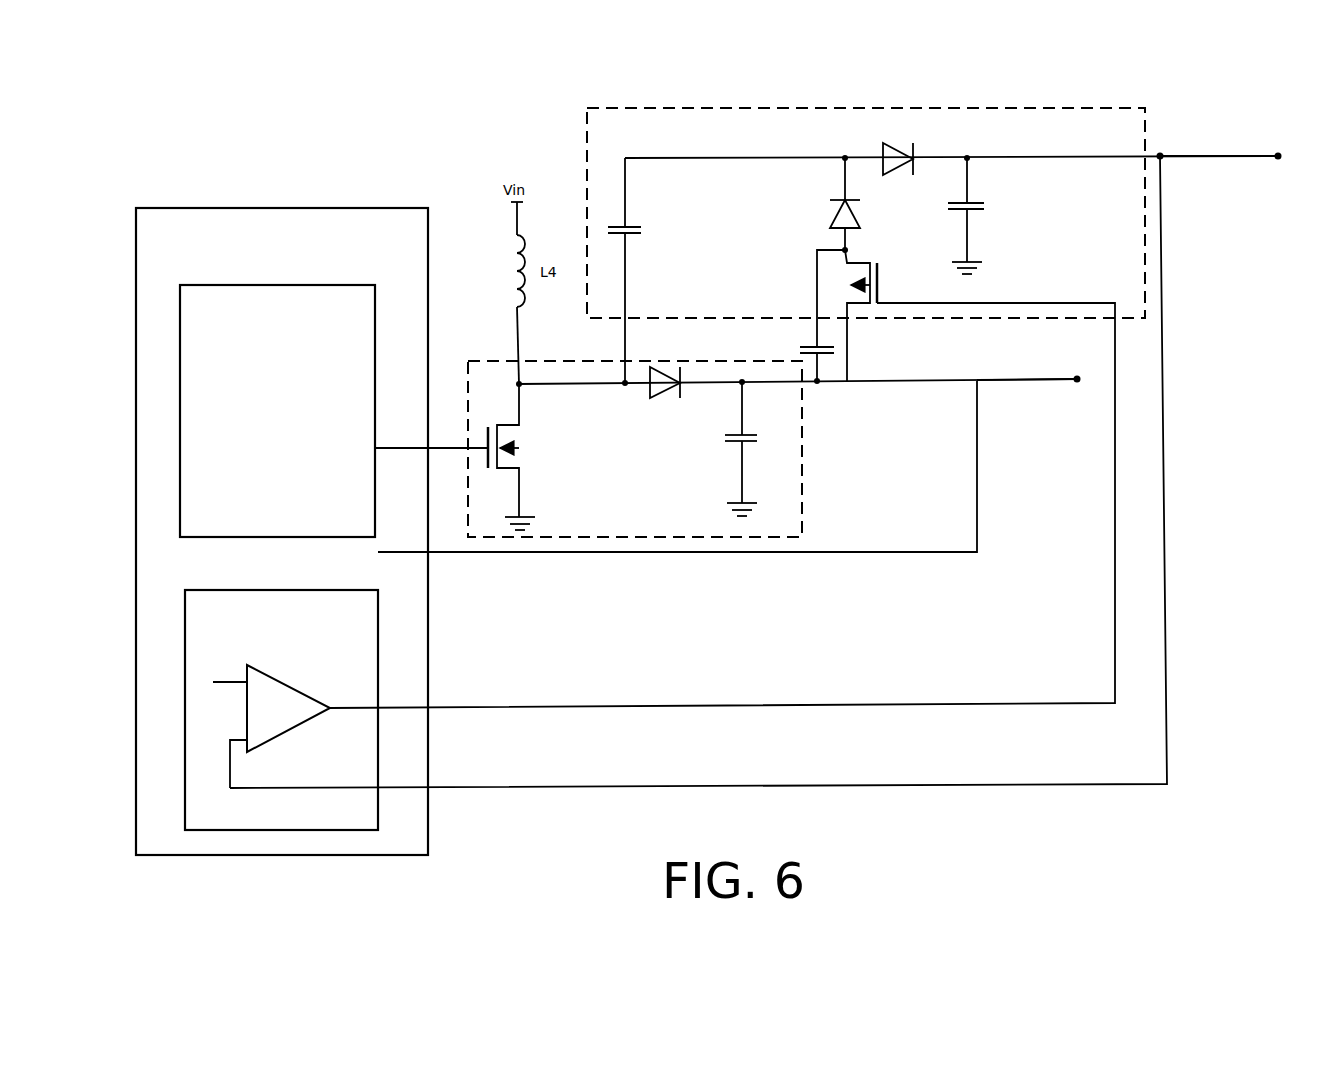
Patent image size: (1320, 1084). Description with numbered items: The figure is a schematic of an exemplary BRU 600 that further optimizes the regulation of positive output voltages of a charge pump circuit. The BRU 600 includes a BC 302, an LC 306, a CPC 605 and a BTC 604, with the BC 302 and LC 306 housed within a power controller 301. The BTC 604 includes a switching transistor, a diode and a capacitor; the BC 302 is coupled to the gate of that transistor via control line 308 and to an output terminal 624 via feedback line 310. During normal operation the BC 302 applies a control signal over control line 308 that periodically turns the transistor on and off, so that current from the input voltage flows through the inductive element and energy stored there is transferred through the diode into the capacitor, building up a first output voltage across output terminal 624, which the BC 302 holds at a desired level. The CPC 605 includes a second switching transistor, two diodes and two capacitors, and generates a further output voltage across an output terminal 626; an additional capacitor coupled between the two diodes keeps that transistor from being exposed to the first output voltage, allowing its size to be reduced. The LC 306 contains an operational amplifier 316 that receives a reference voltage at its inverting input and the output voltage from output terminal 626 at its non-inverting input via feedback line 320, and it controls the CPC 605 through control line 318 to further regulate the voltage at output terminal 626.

The BRU 600 is at (182, 111).
The power controller 301 is at (207, 199).
The BC 302 is at (215, 283).
The LC 306 is at (215, 590).
The control line 308 is at (407, 455).
The feedback line 310 is at (407, 558).
The operational amplifier 316 is at (279, 680).
The control line 318 is at (407, 713).
The feedback line 320 is at (407, 793).
The BTC 604 is at (576, 538).
The CPC 605 is at (642, 108).
The output terminal 624 is at (1003, 392).
The output terminal 626 is at (1210, 170).